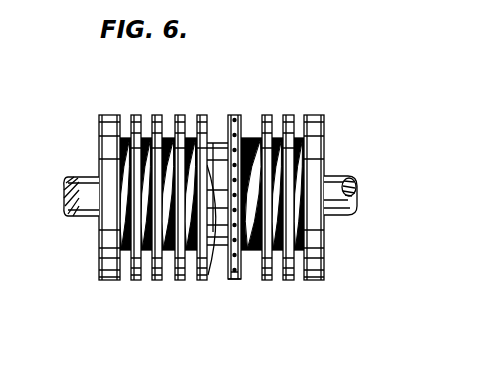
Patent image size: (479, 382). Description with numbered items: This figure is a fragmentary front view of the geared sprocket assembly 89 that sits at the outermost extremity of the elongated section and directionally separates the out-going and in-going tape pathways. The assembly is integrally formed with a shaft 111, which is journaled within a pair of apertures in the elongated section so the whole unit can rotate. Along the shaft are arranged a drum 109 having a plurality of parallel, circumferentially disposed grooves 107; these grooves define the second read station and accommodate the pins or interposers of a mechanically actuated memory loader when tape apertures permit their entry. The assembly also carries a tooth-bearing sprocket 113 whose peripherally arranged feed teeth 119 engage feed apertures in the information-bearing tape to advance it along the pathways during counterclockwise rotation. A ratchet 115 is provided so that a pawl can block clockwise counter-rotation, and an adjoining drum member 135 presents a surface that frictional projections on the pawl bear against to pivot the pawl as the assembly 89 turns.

The geared sprocket assembly 89 is at (329, 268).
The grooves 107 is at (148, 122).
The drum 109 is at (105, 113).
The shaft 111 is at (345, 205).
The tooth-bearing sprocket 113 is at (240, 278).
The ratchet 115 is at (213, 157).
The feed teeth 119 is at (233, 281).
The drum member 135 is at (209, 283).